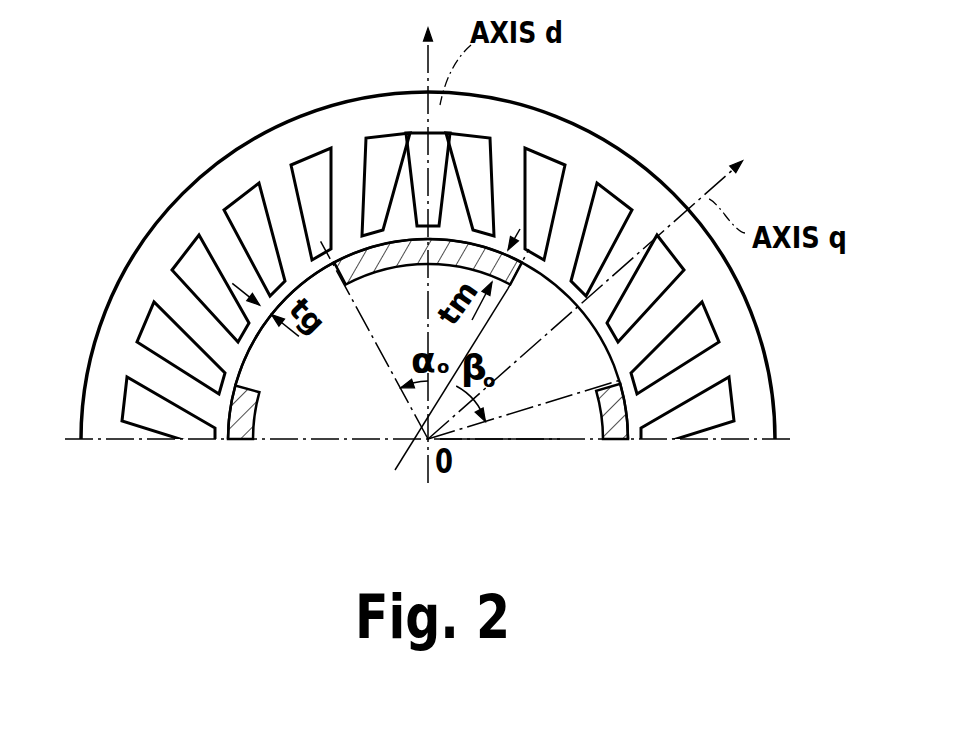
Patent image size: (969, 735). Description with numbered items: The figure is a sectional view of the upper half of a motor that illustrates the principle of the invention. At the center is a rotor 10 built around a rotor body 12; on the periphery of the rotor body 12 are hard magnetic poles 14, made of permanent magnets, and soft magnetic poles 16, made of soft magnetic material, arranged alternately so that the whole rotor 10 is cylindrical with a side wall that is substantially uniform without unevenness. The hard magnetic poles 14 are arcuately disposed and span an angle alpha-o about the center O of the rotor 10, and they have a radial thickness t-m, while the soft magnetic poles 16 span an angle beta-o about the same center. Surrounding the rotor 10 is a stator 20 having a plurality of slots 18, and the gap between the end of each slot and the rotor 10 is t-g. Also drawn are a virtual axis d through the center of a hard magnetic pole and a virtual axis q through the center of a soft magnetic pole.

The rotor 10 is at (497, 452).
The rotor body 12 is at (357, 423).
The hard magnetic poles 14 is at (400, 257).
The soft magnetic poles 16 is at (272, 348).
The slots 18 is at (693, 403).
The stator 20 is at (627, 143).